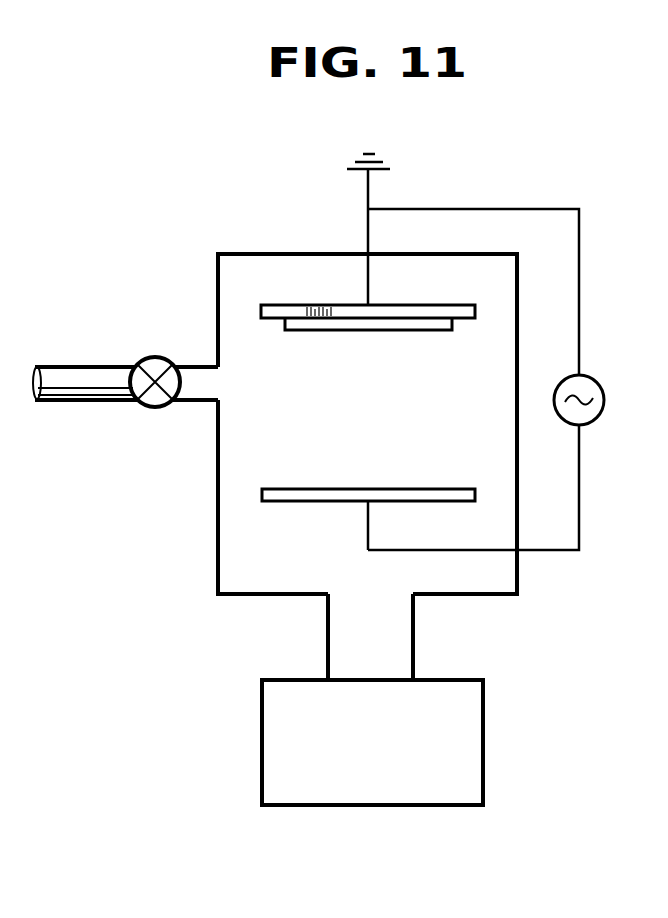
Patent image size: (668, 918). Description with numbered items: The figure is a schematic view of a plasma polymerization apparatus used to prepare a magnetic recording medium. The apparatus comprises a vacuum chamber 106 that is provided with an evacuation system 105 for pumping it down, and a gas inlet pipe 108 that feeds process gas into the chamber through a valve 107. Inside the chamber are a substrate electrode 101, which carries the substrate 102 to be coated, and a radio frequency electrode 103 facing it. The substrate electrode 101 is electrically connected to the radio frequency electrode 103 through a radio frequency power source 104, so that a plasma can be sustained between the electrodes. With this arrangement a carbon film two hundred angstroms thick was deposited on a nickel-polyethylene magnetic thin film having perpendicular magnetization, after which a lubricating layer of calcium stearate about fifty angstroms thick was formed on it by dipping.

The substrate electrode 101 is at (290, 303).
The substrate 102 is at (350, 332).
The radio frequency electrode 103 is at (297, 503).
The radio frequency power source 104 is at (602, 406).
The evacuation system 105 is at (575, 600).
The vacuum chamber 106 is at (565, 697).
The valve 107 is at (143, 406).
The gas inlet pipe 108 is at (85, 366).